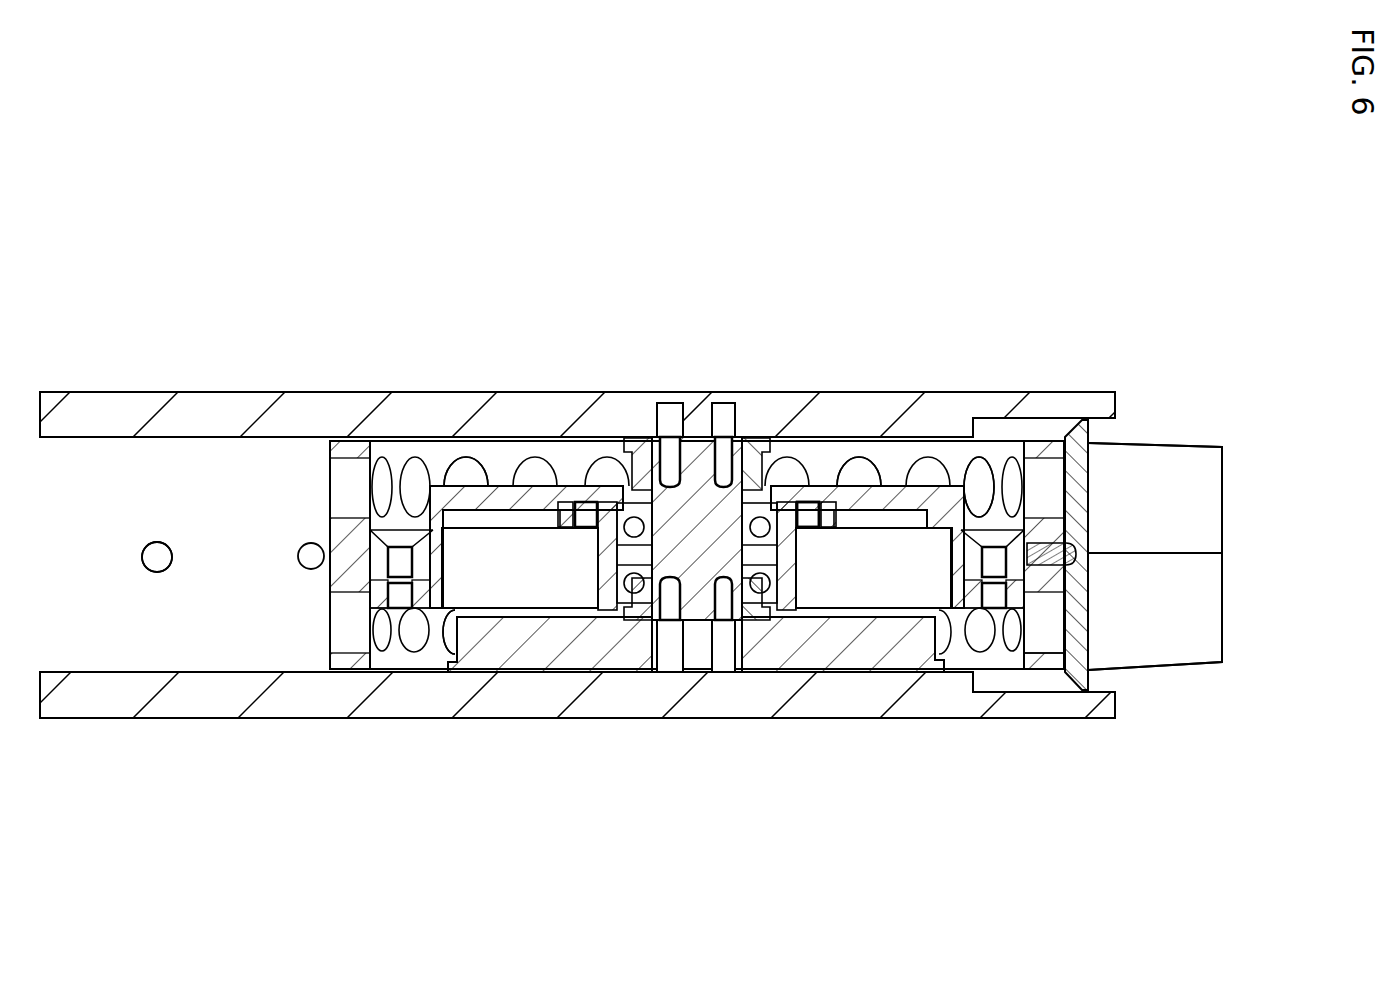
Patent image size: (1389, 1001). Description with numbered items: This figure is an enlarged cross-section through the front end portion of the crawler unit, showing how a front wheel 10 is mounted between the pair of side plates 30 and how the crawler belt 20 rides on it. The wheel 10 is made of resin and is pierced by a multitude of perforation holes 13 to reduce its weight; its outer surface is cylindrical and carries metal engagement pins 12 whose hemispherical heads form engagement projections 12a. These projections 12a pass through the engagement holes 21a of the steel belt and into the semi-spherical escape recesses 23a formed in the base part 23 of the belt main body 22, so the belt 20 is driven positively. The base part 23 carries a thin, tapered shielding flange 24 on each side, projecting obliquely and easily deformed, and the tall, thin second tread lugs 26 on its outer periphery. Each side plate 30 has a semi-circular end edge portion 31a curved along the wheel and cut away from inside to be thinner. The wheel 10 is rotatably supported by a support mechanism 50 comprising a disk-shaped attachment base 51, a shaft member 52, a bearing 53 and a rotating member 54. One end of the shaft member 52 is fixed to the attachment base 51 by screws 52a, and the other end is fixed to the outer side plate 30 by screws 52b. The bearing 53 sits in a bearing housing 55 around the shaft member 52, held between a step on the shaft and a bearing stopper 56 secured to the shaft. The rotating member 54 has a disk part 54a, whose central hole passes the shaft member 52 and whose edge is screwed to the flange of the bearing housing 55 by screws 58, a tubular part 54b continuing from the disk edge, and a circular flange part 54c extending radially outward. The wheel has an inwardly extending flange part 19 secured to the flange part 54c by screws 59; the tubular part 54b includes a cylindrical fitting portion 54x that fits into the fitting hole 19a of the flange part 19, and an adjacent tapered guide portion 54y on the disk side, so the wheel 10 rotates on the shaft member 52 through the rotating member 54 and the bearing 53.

The wheel 10 is at (1043, 663).
The engagement pin 12 is at (1040, 595).
The engagement projection 12a is at (1076, 540).
The perforation hole 13 is at (870, 475).
The flange part 19 is at (445, 572).
The fitting hole 19a is at (948, 568).
The crawler belt 20 is at (1102, 612).
The engagement hole 21a is at (150, 546).
The belt main body 22 is at (1100, 477).
The base part 23 is at (1090, 457).
The escape recess 23a is at (1010, 600).
The shielding flange 24 is at (1093, 432).
The second tread lug 26 is at (1198, 492).
The side plate 30 is at (205, 408).
The end edge portion 31a is at (1085, 718).
The support mechanism 50 is at (494, 478).
The attachment base 51 is at (565, 652).
The shaft member 52 is at (697, 665).
The screw 52a is at (668, 655).
The screw 52b is at (670, 417).
The bearing 53 is at (617, 533).
The rotating member 54 is at (522, 490).
The disk part 54a is at (477, 490).
The tubular part 54b is at (448, 575).
The flange part 54c is at (378, 597).
The fitting portion 54x is at (1000, 543).
The guide portion 54y is at (970, 457).
The bearing housing 55 is at (822, 570).
The bearing stopper 56 is at (757, 447).
The screw 58 is at (810, 495).
The screw 59 is at (400, 548).